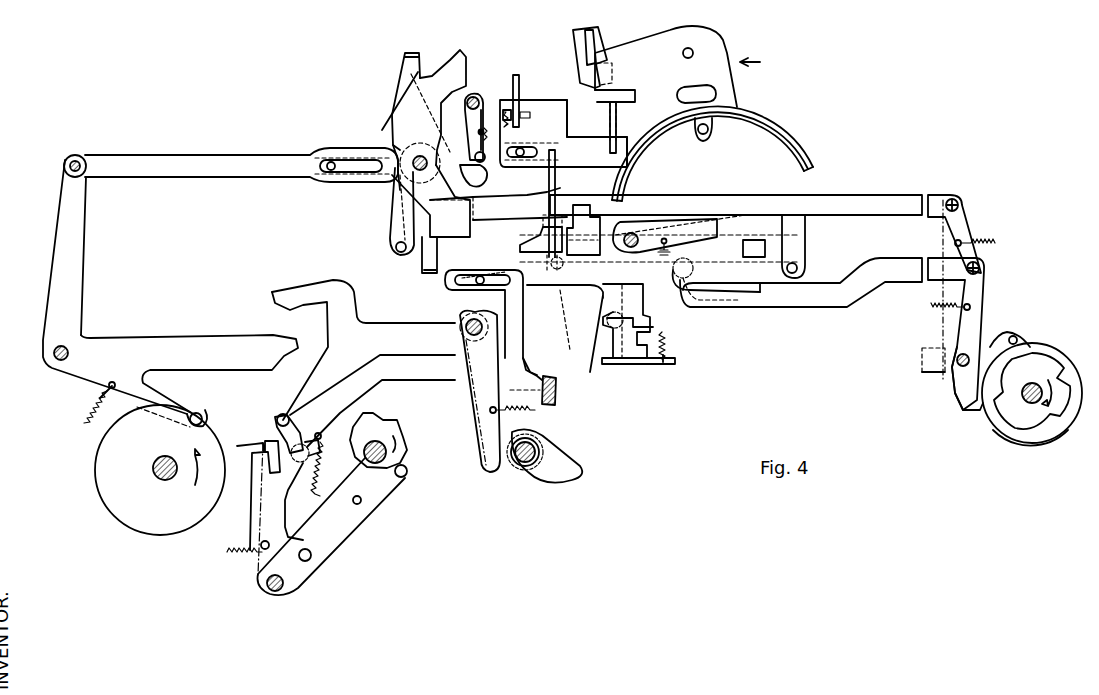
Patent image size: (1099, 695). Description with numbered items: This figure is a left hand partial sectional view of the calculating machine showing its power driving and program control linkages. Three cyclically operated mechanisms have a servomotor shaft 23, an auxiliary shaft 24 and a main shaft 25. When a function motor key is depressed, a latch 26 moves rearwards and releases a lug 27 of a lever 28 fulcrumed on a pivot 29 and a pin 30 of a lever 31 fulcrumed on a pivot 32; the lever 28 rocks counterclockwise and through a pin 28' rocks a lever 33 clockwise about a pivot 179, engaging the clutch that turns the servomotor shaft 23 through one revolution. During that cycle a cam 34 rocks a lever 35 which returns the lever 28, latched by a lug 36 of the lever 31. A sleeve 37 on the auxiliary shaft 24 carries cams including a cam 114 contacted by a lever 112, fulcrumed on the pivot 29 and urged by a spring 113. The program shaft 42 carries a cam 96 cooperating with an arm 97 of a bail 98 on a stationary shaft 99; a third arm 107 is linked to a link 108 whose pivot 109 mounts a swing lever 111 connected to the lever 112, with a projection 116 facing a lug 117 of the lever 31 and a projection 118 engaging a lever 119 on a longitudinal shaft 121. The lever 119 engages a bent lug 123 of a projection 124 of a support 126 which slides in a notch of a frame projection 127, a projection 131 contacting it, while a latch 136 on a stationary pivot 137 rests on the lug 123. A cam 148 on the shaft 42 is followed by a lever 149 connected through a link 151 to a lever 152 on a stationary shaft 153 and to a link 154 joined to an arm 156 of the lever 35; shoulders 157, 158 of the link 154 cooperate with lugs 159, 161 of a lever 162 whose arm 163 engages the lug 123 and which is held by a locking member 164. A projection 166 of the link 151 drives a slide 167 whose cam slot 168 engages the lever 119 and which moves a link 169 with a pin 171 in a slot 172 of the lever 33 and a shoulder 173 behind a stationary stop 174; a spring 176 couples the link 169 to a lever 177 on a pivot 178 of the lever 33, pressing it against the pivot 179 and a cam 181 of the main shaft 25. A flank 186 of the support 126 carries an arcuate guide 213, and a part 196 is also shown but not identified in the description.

The servomotor shaft 23 is at (160, 476).
The auxiliary shaft 24 is at (515, 465).
The main shaft 25 is at (378, 440).
The latch 26 is at (610, 346).
The lug 27 is at (646, 364).
The lever 28 is at (363, 350).
The pin 28' is at (263, 412).
The pivot 29 is at (466, 322).
The pin 30 is at (628, 362).
The lever 31 is at (653, 321).
The pivot 32 is at (636, 235).
The lever 33 is at (258, 501).
The cam 34 is at (98, 470).
The lever 35 is at (130, 343).
The lug 36 is at (670, 336).
The sleeve 37 is at (529, 468).
The program shaft 42 is at (1020, 391).
The cam 96 is at (1034, 352).
The arm 97 is at (958, 403).
The bail 98 is at (922, 361).
The stationary shaft 99 is at (955, 368).
The third arm 107 is at (982, 291).
The link 108 is at (798, 307).
The pivot 109 is at (690, 262).
The swing lever 111 is at (705, 281).
The lever 112 is at (478, 410).
The spring 113 is at (535, 411).
The cam 114 is at (568, 476).
The projection 116 is at (750, 240).
The lug 117 is at (720, 219).
The projection 118 is at (588, 206).
The lever 119 is at (548, 190).
The longitudinal shaft 121 is at (530, 265).
The bent lug 123 is at (564, 152).
The projection 124 is at (608, 119).
The support 126 is at (768, 61).
The projection 127 is at (600, 36).
The projection 131 is at (588, 52).
The latch 136 is at (520, 87).
The stationary pivot 137 is at (530, 115).
The cam 148 is at (1030, 441).
The lever 149 is at (966, 221).
The link 151 is at (880, 198).
The lever 152 is at (395, 230).
The stationary shaft 153 is at (425, 160).
The link 154 is at (232, 153).
The arm 156 is at (80, 247).
The shoulder 157 is at (478, 259).
The shoulder 158 is at (450, 65).
The lug 159 is at (427, 273).
The lug 161 is at (412, 52).
The lever 162 is at (440, 202).
The arm 163 is at (480, 182).
The locking member 164 is at (484, 105).
The projection 166 is at (800, 238).
The slide 167 is at (795, 275).
The cam slot 168 is at (515, 248).
The link 169 is at (420, 382).
The pin 171 is at (302, 466).
The slot 172 is at (280, 436).
The shoulder 173 is at (535, 372).
The stationary stop 174 is at (557, 393).
The spring 176 is at (350, 499).
The lever 177 is at (362, 522).
The pivot 178 is at (312, 556).
The pivot 179 is at (284, 586).
The cam 181 is at (405, 441).
The flank 186 is at (703, 32).
The slot 196 is at (715, 91).
The arcuate guide 213 is at (814, 170).